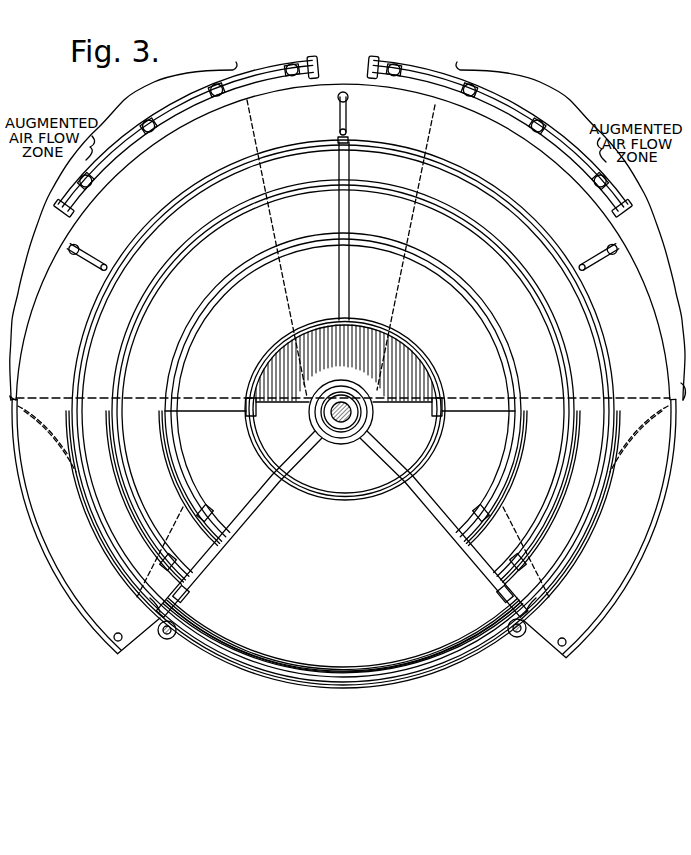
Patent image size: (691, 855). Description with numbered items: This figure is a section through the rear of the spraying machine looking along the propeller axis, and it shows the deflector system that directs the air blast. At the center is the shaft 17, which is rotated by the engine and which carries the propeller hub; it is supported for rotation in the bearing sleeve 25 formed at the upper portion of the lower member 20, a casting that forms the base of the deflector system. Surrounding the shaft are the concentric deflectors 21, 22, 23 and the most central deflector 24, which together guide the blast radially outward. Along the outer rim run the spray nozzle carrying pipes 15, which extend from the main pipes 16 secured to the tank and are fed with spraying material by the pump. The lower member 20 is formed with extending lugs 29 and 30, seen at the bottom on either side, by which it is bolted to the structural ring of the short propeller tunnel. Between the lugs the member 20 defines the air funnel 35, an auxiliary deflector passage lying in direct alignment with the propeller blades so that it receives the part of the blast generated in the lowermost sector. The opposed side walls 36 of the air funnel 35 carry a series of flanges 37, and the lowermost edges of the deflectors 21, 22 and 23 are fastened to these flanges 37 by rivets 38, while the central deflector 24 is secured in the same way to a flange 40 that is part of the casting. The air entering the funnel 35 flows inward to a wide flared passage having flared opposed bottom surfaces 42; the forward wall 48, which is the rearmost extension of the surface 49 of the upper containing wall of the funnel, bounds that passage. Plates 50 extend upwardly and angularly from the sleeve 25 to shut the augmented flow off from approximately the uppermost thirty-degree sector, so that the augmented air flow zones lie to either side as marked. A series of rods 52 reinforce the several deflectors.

The spray nozzle carrying pipes 15 is at (288, 66).
The main pipes 16 is at (372, 57).
The shaft 17 is at (341, 424).
The lower member 20 is at (257, 684).
The deflector 21 is at (190, 170).
The deflector 22 is at (214, 220).
The deflector 23 is at (236, 262).
The central deflector 24 is at (258, 317).
The bearing sleeve 25 is at (375, 421).
The lug 29 is at (172, 641).
The lug 30 is at (518, 639).
The air funnel 35 is at (348, 580).
The side walls 36 is at (262, 503).
The flanges 37 is at (214, 518).
The rivets 38 is at (172, 565).
The flange 40 is at (258, 406).
The flared bottom surfaces 42 is at (70, 426).
The forward wall 48 is at (218, 396).
The surface of the upper containing wall 49 is at (343, 503).
The plates 50 is at (290, 300).
The rods 52 is at (92, 257).